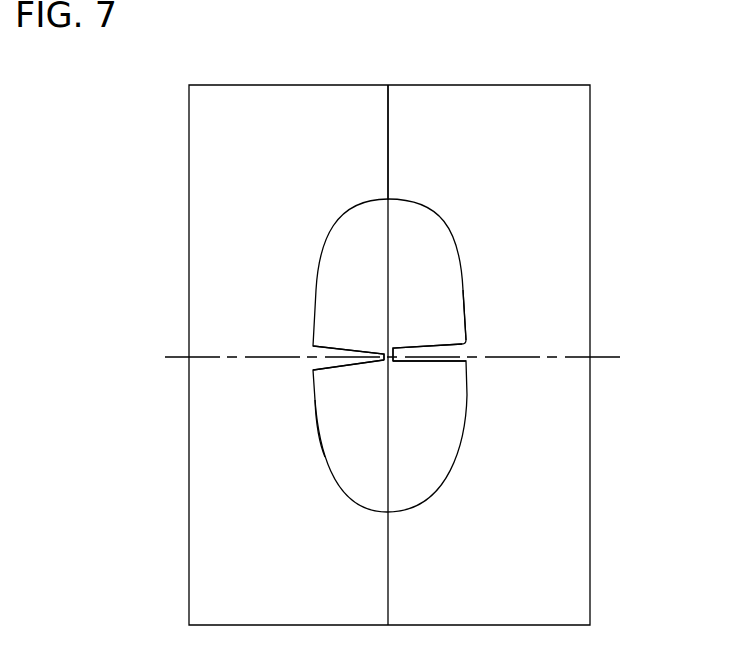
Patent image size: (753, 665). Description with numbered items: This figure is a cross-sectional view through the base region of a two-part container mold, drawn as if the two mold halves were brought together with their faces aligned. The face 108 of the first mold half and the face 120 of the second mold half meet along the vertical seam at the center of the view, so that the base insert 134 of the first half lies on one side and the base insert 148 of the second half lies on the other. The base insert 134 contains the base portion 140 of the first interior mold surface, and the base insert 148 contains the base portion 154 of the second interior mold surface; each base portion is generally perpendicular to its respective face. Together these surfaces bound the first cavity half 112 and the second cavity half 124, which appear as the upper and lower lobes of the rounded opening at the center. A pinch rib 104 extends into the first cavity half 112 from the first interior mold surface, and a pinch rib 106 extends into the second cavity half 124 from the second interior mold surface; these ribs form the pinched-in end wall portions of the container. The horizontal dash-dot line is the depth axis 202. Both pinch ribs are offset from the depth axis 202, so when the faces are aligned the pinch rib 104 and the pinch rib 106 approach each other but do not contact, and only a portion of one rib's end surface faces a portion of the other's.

The pinch rib 104 is at (417, 363).
The pinch rib 106 is at (337, 347).
The face 108 is at (388, 115).
The first cavity half 112 is at (422, 275).
The face 120 is at (388, 146).
The second cavity half 124 is at (373, 453).
The base insert 134 is at (558, 156).
The base portion 140 is at (466, 310).
The base insert 148 is at (270, 143).
The base portion 154 is at (325, 457).
The depth axis 202 is at (612, 357).